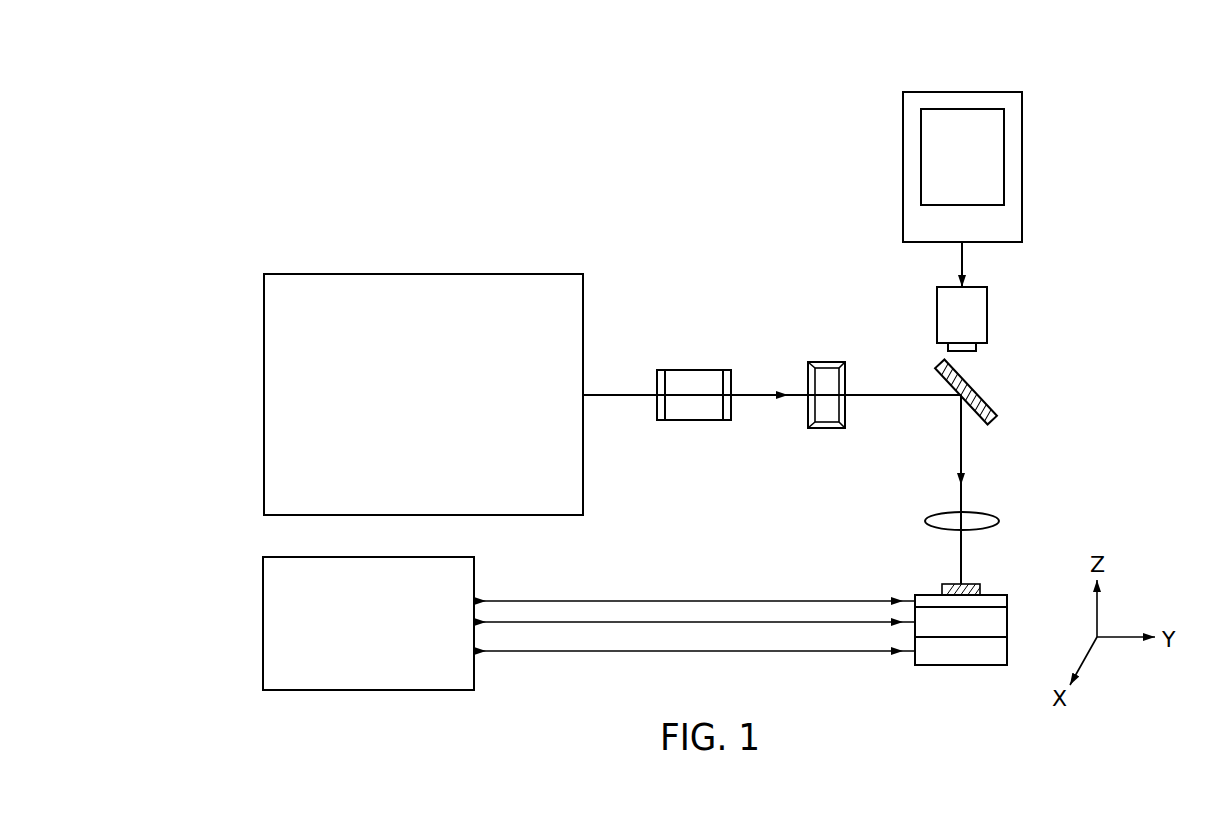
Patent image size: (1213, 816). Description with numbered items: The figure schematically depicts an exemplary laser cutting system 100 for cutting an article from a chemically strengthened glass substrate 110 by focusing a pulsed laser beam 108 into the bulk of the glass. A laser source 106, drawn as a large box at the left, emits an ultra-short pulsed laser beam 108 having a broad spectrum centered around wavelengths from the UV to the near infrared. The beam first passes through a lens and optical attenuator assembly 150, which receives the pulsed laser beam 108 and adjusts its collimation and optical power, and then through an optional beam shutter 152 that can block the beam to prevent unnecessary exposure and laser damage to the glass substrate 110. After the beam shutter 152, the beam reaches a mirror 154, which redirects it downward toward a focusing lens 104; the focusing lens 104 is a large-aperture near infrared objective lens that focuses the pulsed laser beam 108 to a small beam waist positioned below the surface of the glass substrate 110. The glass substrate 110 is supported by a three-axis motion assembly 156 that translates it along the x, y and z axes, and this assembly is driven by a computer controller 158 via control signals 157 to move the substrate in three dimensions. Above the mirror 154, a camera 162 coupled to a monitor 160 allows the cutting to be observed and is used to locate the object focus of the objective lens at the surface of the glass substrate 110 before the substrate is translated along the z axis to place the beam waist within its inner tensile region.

The system 100 is at (1124, 143).
The focusing lens 104 is at (926, 516).
The laser source 106 is at (393, 274).
The pulsed laser beam 108 is at (610, 398).
The glass substrate 110 is at (980, 588).
The lens and optical attenuator assembly 150 is at (690, 370).
The beam shutter 152 is at (823, 362).
The mirror 154 is at (990, 405).
The 3-axis motion assembly 156 is at (962, 665).
The control signals 157 is at (712, 594).
The computer controller 158 is at (263, 633).
The monitor 160 is at (903, 153).
The camera 162 is at (987, 313).